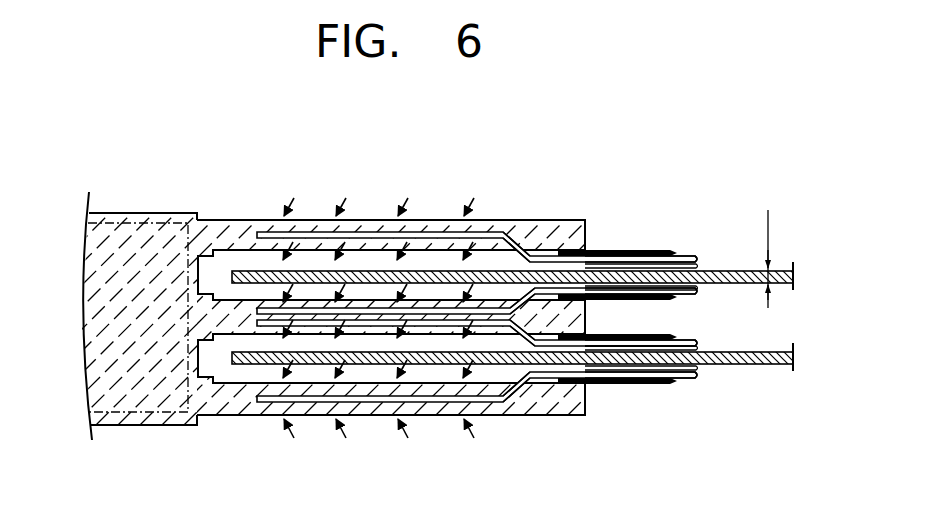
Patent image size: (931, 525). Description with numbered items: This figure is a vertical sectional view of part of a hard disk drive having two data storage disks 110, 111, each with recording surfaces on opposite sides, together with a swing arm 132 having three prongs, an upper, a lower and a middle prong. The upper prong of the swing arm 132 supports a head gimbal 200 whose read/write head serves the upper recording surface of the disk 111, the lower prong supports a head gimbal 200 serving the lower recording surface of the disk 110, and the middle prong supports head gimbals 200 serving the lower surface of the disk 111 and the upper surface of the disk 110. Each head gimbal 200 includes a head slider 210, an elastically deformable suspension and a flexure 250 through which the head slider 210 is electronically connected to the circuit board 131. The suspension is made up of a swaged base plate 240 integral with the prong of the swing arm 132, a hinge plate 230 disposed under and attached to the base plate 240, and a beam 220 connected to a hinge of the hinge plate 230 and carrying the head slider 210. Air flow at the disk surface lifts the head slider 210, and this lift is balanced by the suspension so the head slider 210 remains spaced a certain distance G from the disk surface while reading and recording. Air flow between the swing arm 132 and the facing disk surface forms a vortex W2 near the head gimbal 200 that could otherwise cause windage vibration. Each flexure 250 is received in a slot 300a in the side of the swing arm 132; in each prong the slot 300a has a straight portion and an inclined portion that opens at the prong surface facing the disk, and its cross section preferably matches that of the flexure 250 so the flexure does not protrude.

The data storage disk 110 is at (795, 356).
The data storage disk 111 is at (795, 276).
The circuit board 131 is at (136, 224).
The swing arm 132 is at (234, 221).
The head gimbal 200 is at (633, 256).
The head slider 210 is at (661, 281).
The beam 220 is at (655, 256).
The hinge plate 230 is at (625, 250).
The base plate 240 is at (571, 250).
The flexure 250 is at (505, 231).
The slot 300a is at (433, 232).
The vortex W2 is at (346, 198).
The distance G is at (759, 259).